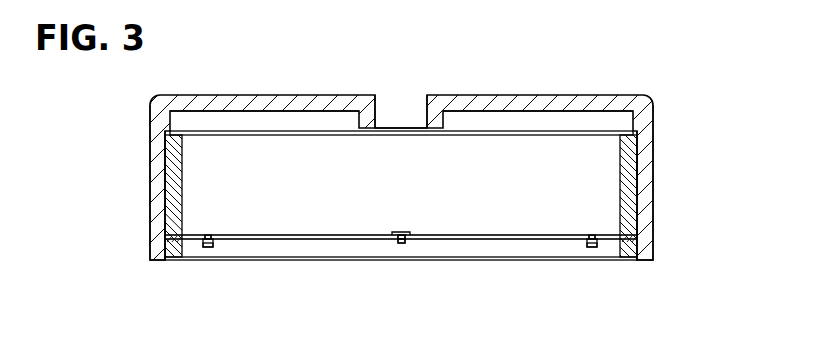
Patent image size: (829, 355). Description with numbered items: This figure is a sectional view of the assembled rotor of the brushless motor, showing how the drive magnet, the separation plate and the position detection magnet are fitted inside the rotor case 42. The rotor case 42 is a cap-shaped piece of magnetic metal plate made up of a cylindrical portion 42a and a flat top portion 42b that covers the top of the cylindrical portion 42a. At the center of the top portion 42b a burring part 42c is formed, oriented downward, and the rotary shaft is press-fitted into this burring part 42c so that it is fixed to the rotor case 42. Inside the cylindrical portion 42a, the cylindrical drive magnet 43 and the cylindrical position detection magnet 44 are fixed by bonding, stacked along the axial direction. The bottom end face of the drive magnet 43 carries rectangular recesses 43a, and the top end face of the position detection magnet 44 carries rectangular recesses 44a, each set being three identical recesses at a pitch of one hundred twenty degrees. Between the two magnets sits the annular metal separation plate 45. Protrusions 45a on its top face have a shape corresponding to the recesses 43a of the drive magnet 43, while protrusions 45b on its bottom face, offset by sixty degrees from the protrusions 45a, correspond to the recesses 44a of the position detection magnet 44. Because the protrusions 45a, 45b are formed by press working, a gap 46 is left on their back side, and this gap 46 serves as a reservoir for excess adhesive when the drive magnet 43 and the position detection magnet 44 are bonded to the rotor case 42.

The rotor case 42 is at (620, 94).
The cylindrical portion 42a is at (648, 150).
The top portion 42b is at (557, 100).
The burring part 42c is at (357, 118).
The drive magnet 43 is at (628, 197).
The recesses 43a is at (356, 288).
The position detection magnet 44 is at (626, 258).
The recesses 44a is at (399, 290).
The separation plate 45 is at (625, 238).
The protrusions 45a is at (402, 232).
The protrusions 45b is at (208, 247).
The gap 46 is at (212, 236).